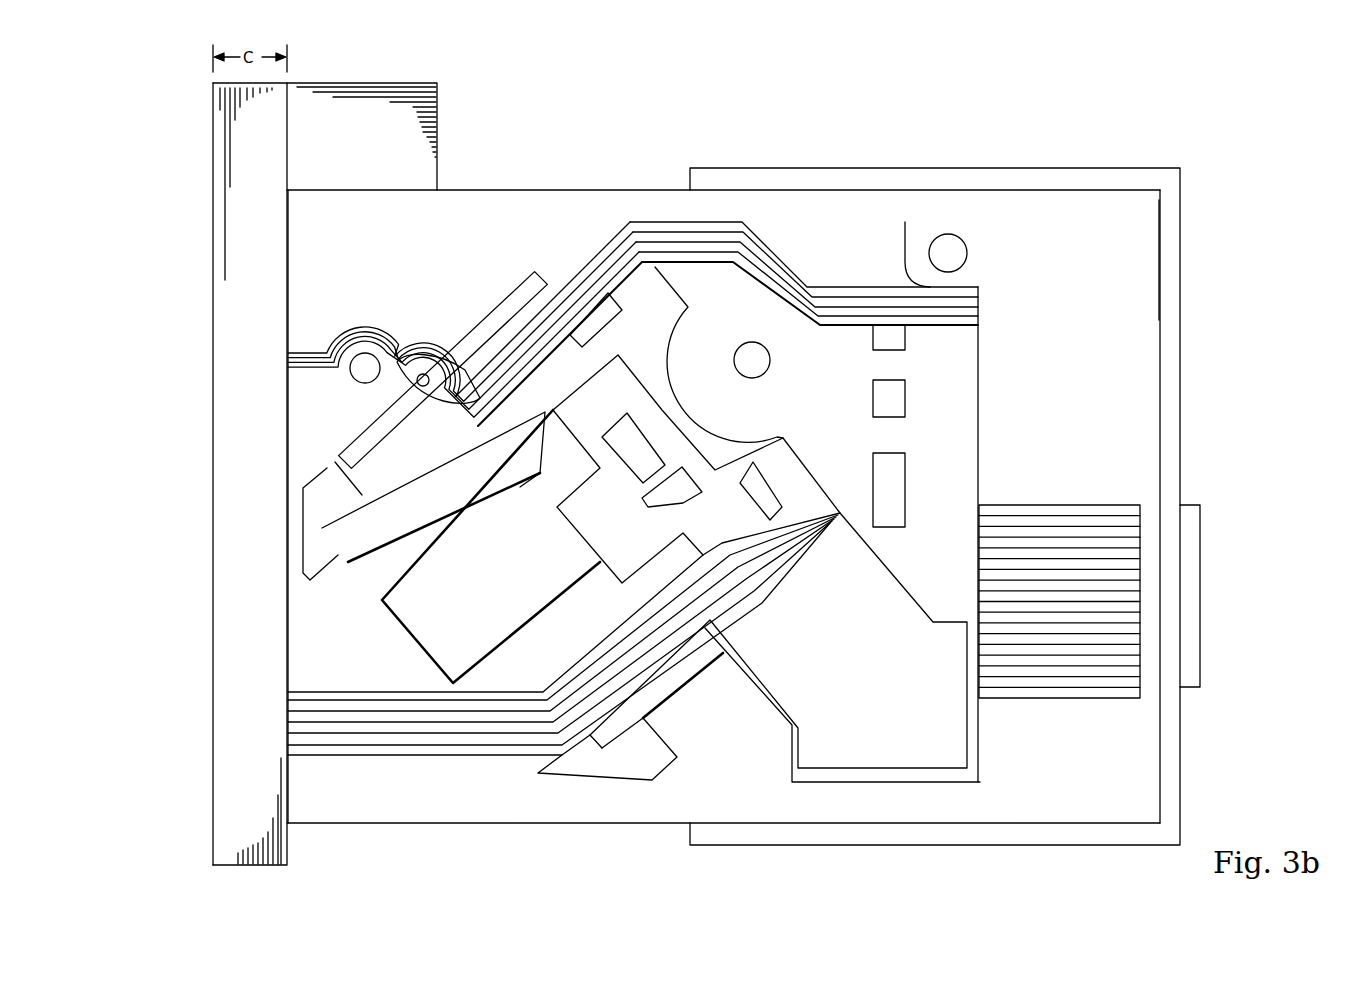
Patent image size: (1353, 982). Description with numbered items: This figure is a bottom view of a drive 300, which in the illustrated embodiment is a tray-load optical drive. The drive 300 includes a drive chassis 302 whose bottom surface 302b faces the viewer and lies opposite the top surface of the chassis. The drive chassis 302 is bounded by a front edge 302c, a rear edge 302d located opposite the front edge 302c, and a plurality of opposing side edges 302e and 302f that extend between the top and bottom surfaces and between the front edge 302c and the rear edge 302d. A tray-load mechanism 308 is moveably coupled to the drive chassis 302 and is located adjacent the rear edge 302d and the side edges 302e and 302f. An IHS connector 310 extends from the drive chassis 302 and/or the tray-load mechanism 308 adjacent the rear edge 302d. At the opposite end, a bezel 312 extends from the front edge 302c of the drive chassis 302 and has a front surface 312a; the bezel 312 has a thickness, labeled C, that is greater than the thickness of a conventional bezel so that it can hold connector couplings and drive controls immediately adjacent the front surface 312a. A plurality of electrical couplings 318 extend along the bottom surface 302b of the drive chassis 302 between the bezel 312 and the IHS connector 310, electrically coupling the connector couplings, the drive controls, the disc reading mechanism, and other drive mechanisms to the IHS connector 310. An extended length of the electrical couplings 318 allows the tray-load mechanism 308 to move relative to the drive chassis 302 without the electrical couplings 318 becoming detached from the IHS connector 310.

The drive 300 is at (943, 107).
The drive chassis 302 is at (1158, 769).
The bottom surface 302b is at (1110, 258).
The front edge 302c is at (290, 272).
The rear edge 302d is at (1165, 345).
The side edge 302e is at (468, 823).
The side edge 302f is at (540, 190).
The tray-load mechanism 308 is at (1180, 168).
The IHS connector 310 is at (1200, 590).
The bezel 312 is at (272, 678).
The front surface 312a is at (213, 471).
The electrical couplings 318 is at (845, 285).